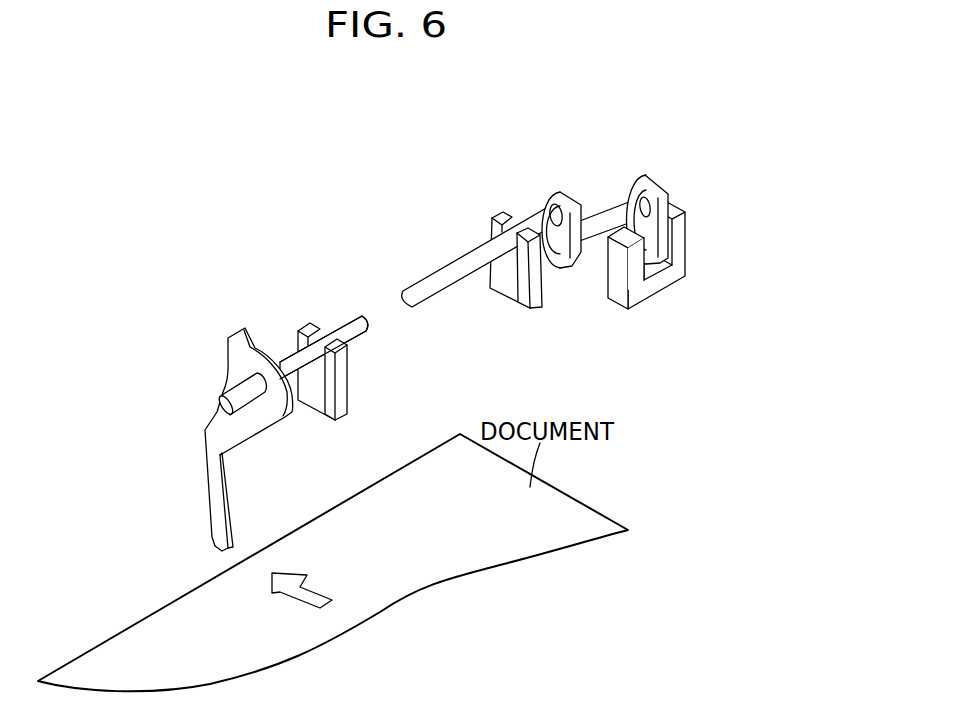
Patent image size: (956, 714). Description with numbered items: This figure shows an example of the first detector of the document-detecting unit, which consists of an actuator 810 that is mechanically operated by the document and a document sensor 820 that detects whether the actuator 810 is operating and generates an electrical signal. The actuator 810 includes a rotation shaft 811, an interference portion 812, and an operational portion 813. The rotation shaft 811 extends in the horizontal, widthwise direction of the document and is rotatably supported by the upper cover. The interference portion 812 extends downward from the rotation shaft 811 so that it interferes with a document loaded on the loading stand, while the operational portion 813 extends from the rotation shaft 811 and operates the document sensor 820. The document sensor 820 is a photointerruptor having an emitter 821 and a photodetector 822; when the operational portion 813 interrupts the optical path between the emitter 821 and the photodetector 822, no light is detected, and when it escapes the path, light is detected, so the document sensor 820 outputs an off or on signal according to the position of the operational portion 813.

The actuator 810 is at (554, 183).
The rotation shaft 811 is at (449, 267).
The interference portion 812 is at (233, 369).
The operational portion 813 is at (650, 178).
The document sensor 820 is at (660, 299).
The emitter 821 is at (617, 287).
The photodetector 822 is at (688, 242).